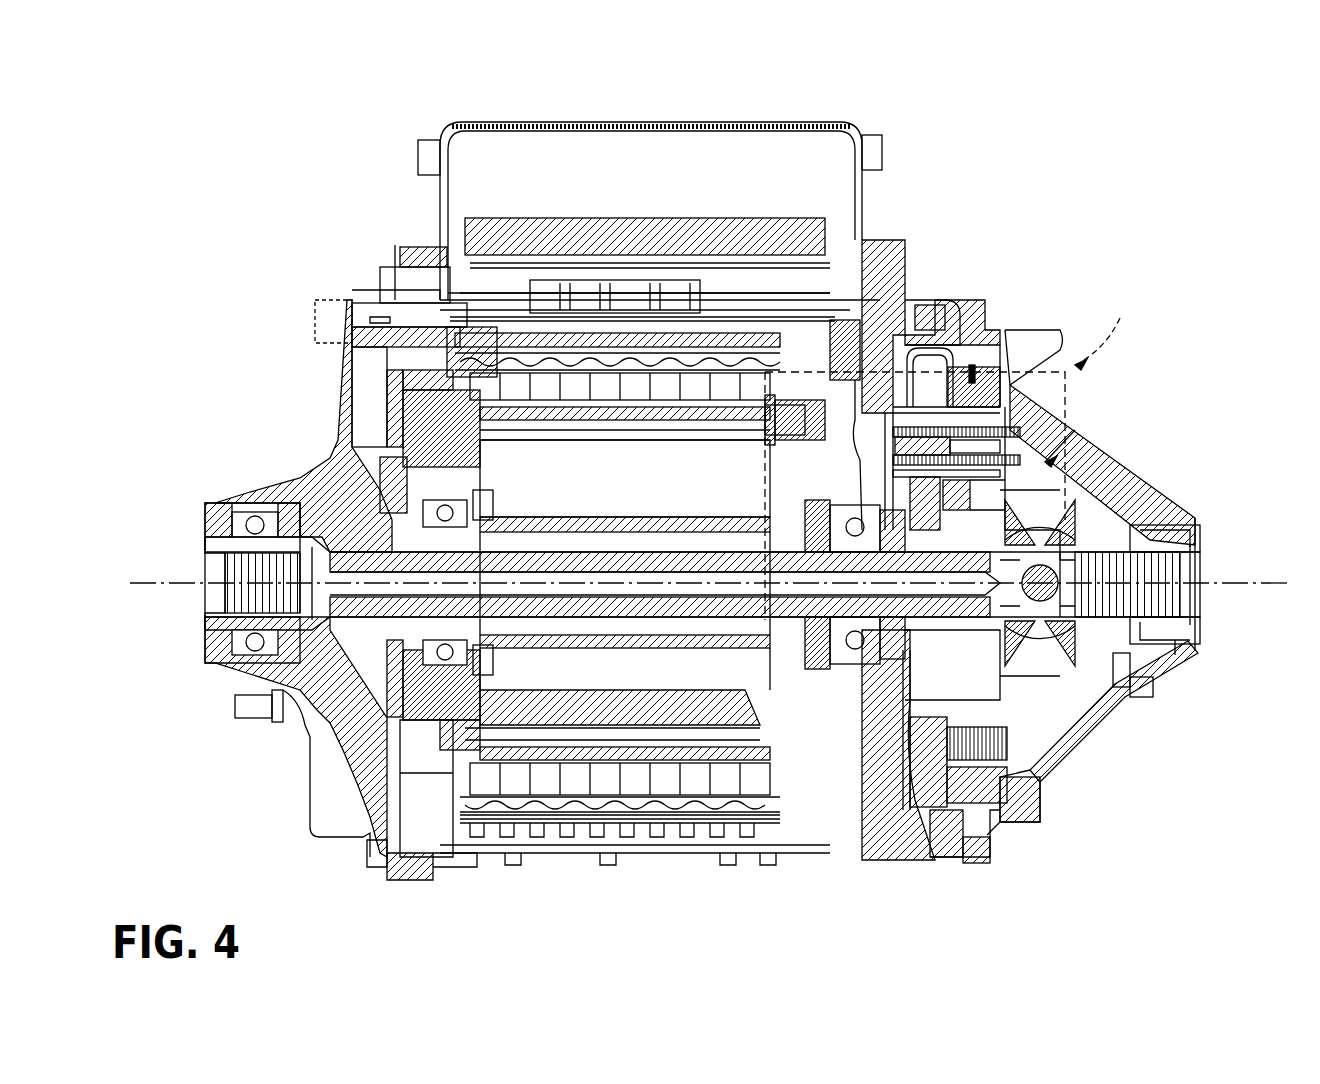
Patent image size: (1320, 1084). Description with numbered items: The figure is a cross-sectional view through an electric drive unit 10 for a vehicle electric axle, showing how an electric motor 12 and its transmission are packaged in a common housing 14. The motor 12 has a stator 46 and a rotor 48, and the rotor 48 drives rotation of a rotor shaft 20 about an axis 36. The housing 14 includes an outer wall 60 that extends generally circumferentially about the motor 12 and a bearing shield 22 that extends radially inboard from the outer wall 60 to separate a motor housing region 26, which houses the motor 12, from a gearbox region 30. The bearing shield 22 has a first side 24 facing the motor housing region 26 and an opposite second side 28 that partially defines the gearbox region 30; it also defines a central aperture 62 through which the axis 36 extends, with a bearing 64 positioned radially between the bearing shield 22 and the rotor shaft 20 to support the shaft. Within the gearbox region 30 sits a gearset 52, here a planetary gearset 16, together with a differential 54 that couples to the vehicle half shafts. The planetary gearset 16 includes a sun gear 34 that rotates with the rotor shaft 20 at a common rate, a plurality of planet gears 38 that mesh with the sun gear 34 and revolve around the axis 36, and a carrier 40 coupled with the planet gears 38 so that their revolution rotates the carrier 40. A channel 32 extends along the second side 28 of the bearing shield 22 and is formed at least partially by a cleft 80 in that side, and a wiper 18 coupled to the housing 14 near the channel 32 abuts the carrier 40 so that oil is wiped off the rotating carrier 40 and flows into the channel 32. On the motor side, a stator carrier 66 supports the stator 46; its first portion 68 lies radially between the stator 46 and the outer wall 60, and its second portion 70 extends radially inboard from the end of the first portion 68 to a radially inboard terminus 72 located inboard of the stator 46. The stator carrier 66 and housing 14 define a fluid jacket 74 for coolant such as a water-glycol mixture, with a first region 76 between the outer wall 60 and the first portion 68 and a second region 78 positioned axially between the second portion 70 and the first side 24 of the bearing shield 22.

The electric drive unit 10 is at (1073, 132).
The electric motor 12 is at (380, 427).
The housing 14 is at (885, 335).
The planetary gearset 16 is at (1030, 365).
The wiper 18 is at (985, 345).
The rotor shaft 20 is at (852, 640).
The bearing shield 22 is at (858, 318).
The first side 24 is at (870, 300).
The motor housing region 26 is at (775, 395).
The second side 28 is at (942, 308).
The gearbox region 30 is at (950, 495).
The channel 32 is at (800, 520).
The sun gear 34 is at (963, 650).
The axis 36 is at (1228, 575).
The planet gears 38 is at (935, 660).
The carrier 40 is at (900, 700).
The stator 46 is at (540, 470).
The rotor 48 is at (493, 480).
The gearset 52 is at (1030, 365).
The differential 54 is at (1042, 565).
The outer wall 60 is at (605, 378).
The central aperture 62 is at (850, 560).
The bearing 64 is at (828, 545).
The stator carrier 66 is at (663, 357).
The first portion 68 is at (640, 392).
The second portion 70 is at (800, 380).
The radially inboard terminus 72 is at (565, 650).
The fluid jacket 74 is at (700, 347).
The first region 76 is at (723, 348).
The second region 78 is at (767, 477).
The cleft 80 is at (1000, 300).